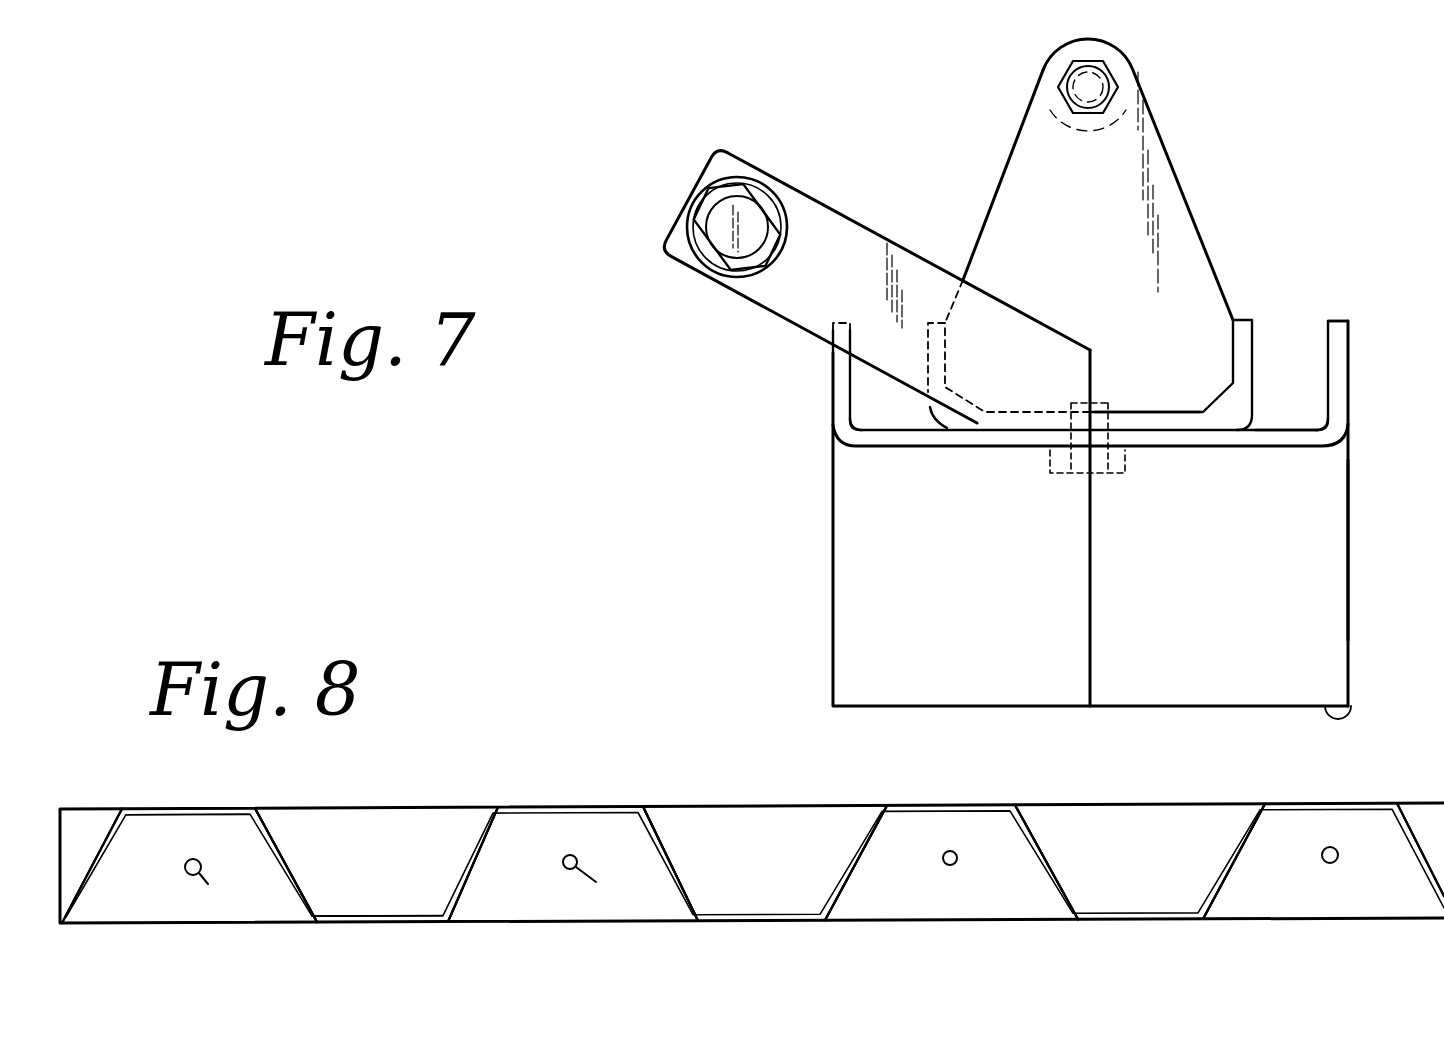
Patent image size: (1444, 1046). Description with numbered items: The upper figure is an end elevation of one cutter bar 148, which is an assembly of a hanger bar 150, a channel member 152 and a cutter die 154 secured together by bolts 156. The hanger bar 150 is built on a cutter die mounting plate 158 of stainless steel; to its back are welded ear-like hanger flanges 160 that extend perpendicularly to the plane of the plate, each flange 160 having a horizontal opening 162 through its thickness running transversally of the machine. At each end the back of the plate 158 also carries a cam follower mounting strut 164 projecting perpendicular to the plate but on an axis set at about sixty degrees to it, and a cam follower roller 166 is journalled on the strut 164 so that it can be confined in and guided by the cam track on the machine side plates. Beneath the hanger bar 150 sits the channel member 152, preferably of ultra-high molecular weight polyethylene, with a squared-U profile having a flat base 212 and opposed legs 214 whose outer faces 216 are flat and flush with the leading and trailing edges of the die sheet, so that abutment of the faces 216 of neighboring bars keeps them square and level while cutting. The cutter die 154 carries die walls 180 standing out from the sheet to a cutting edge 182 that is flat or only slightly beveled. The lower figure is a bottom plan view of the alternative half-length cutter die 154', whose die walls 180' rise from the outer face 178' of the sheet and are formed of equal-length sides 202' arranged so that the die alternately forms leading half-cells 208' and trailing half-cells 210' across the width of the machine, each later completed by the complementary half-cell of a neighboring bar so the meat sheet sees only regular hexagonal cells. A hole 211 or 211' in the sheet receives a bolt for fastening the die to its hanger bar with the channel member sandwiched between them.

In FIG. 7, the cutter bar 148 is at (1384, 160).
In FIG. 7, the hanger bar 150 is at (1222, 270).
In FIG. 7, the channel member 152 is at (1358, 360).
In FIG. 7, the cutter die 154 is at (1133, 528).
In FIG. 7, the bolts 156 is at (1125, 460).
In FIG. 7, the cutter die mounting plate 158 is at (1137, 412).
In FIG. 7, the hanger flanges 160 is at (1178, 210).
In FIG. 7, the horizontal opening 162 is at (1112, 78).
In FIG. 7, the cam follower mounting strut 164 is at (850, 236).
In FIG. 7, the cam follower roller 166 is at (757, 178).
In FIG. 7, the die walls 180 is at (1378, 550).
In FIG. 7, the cutting edge 182 is at (1352, 707).
In FIG. 7, the flat base 212 is at (1276, 434).
In FIG. 7, the legs 214 is at (838, 376).
In FIG. 7, the outer faces 216 is at (835, 432).
In FIG. 8, the cutter die 154' is at (752, 847).
In FIG. 8, the outer face 178' is at (753, 823).
In FIG. 8, the die walls 180' is at (755, 863).
In FIG. 8, the sides 202' is at (284, 844).
In FIG. 8, the leading half-cells 208' is at (760, 863).
In FIG. 8, the trailing half-cells 210' is at (753, 863).
In FIG. 8, the hole 211' is at (761, 874).
In FIG. 8, the hole 211 is at (605, 874).